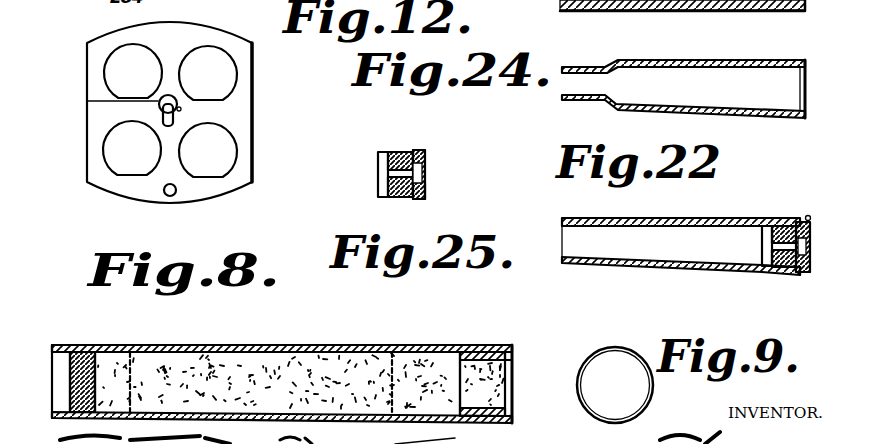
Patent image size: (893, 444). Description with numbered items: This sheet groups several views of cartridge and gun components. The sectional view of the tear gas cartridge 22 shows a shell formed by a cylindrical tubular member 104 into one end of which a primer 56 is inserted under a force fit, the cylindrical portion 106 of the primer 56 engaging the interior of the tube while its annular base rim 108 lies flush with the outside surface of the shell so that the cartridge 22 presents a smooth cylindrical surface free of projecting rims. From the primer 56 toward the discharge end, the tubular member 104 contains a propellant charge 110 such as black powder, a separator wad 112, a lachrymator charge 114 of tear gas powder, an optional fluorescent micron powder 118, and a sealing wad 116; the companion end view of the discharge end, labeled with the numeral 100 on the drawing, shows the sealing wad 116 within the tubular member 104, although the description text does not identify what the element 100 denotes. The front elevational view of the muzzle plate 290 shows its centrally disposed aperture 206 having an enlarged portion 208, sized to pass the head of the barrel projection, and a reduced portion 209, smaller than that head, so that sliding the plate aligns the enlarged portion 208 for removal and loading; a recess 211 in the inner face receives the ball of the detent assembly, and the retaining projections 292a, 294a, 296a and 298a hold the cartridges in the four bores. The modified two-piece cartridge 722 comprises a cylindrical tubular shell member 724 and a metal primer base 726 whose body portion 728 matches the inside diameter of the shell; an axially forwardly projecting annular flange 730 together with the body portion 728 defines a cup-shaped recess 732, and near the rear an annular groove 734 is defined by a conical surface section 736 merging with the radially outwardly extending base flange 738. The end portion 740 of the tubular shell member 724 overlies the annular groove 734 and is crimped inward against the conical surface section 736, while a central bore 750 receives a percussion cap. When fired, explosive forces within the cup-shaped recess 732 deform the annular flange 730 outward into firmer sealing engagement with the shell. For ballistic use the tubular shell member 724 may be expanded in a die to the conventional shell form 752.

In FIG. 12, the muzzle plate 290 is at (190, 23).
In FIG. 12, the retaining projection 292a is at (120, 96).
In FIG. 12, the retaining projection 298a is at (227, 98).
In FIG. 12, the retaining projection 294a is at (112, 167).
In FIG. 12, the retaining projection 296a is at (226, 175).
In FIG. 12, the aperture 206 is at (158, 106).
In FIG. 12, the enlarged portion 208 is at (181, 110).
In FIG. 12, the reduced portion 209 is at (160, 117).
In FIG. 12, the recess 211 is at (168, 197).
In FIG. 24, the end portion 740 is at (800, 60).
In FIG. 22, the end portion 740 is at (793, 276).
In FIG. 24, the conventional shell form 752 is at (662, 60).
In FIG. 25, the cup-shaped recess 732 is at (380, 180).
In FIG. 22, the cup-shaped recess 732 is at (772, 226).
In FIG. 25, the body portion 728 is at (400, 195).
In FIG. 22, the body portion 728 is at (785, 227).
In FIG. 25, the annular flange 730 is at (385, 141).
In FIG. 22, the annular flange 730 is at (768, 276).
In FIG. 25, the primer base 726 is at (432, 156).
In FIG. 22, the primer base 726 is at (808, 268).
In FIG. 25, the bore 750 is at (428, 172).
In FIG. 22, the bore 750 is at (805, 246).
In FIG. 25, the annular groove 734 is at (413, 151).
In FIG. 25, the base flange 738 is at (430, 192).
In FIG. 22, the base flange 738 is at (811, 218).
In FIG. 25, the conical surface section 736 is at (414, 199).
In FIG. 22, the conical surface section 736 is at (797, 224).
In FIG. 22, the cartridge 722 is at (694, 217).
In FIG. 22, the tubular shell member 724 is at (653, 218).
In FIG. 8, the cartridge tube 100 is at (52, 345).
In FIG. 9, the cartridge tube 100 is at (653, 385).
In FIG. 8, the sealing wad 116 is at (97, 350).
In FIG. 9, the sealing wad 116 is at (627, 359).
In FIG. 8, the fluorescent micron powder 118 is at (127, 363).
In FIG. 8, the lachrymator charge 114 is at (270, 362).
In FIG. 8, the tubular member 104 is at (348, 363).
In FIG. 9, the tubular member 104 is at (593, 352).
In FIG. 8, the separator wad 112 is at (392, 352).
In FIG. 8, the tear gas cartridge 22 is at (415, 351).
In FIG. 9, the tear gas cartridge 22 is at (576, 384).
In FIG. 8, the cylindrical portion 106 is at (493, 352).
In FIG. 8, the annular base rim 108 is at (512, 352).
In FIG. 8, the primer 56 is at (513, 364).
In FIG. 8, the propellant charge 110 is at (452, 406).